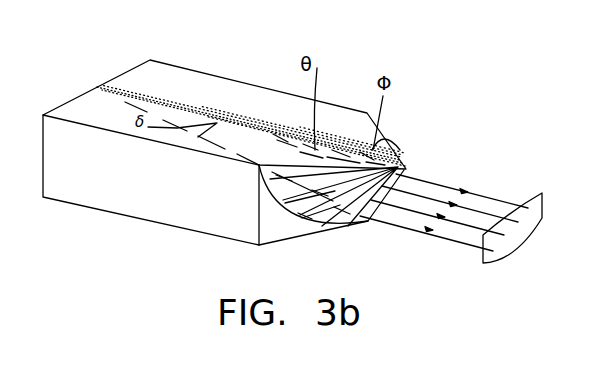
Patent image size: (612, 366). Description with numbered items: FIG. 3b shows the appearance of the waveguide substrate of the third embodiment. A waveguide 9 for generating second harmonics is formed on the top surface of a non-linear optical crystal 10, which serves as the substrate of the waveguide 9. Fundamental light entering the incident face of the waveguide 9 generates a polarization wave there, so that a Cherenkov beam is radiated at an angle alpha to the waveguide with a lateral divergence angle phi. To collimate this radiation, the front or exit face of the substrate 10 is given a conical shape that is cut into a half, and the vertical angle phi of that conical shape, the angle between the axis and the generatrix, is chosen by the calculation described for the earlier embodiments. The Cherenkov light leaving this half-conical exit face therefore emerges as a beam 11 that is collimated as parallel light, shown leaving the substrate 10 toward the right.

The waveguide 9 is at (203, 108).
The non-linear optical crystal 10 is at (160, 80).
The beam 11 is at (425, 188).